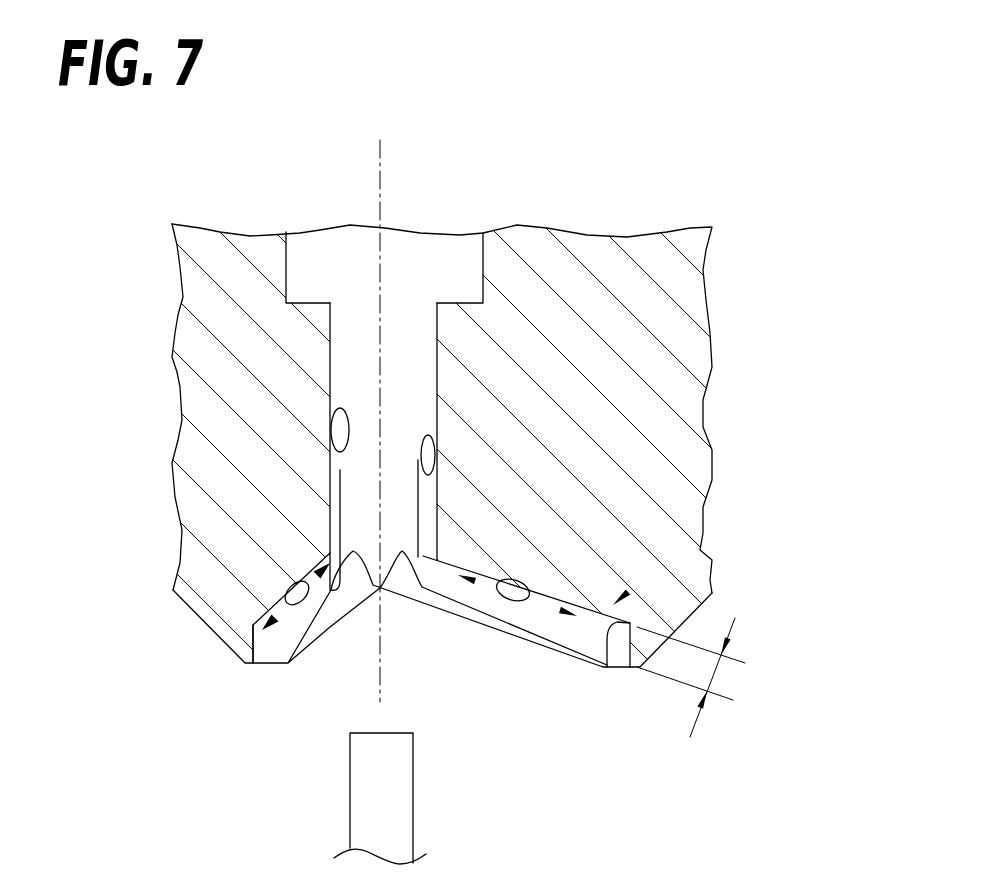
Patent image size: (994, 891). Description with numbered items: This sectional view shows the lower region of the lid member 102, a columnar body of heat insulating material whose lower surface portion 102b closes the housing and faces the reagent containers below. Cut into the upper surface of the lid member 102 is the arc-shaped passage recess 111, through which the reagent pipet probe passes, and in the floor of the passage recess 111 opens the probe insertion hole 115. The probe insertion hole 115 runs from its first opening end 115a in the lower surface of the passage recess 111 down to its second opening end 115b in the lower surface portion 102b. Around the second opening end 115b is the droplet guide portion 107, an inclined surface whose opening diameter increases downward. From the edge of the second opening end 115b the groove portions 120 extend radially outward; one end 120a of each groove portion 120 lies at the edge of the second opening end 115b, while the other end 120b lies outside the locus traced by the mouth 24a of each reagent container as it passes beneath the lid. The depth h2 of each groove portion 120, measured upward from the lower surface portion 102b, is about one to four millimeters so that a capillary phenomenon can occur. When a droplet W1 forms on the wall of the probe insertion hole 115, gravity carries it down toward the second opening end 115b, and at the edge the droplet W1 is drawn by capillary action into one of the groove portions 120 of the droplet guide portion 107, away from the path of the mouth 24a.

The lid member 102 is at (706, 357).
The lower surface portion 102b is at (247, 665).
The passage recess 111 is at (477, 277).
The probe insertion hole 115 is at (437, 407).
The first opening end 115a is at (460, 303).
The second opening end 115b is at (437, 562).
The droplet W1 is at (284, 593).
The groove portion 120 is at (400, 560).
The one end of groove portion 120a is at (430, 565).
The another end of groove portion 120b is at (613, 670).
The droplet guide portion 107 is at (628, 592).
The depth h2 is at (691, 677).
The mouth 24a is at (413, 817).